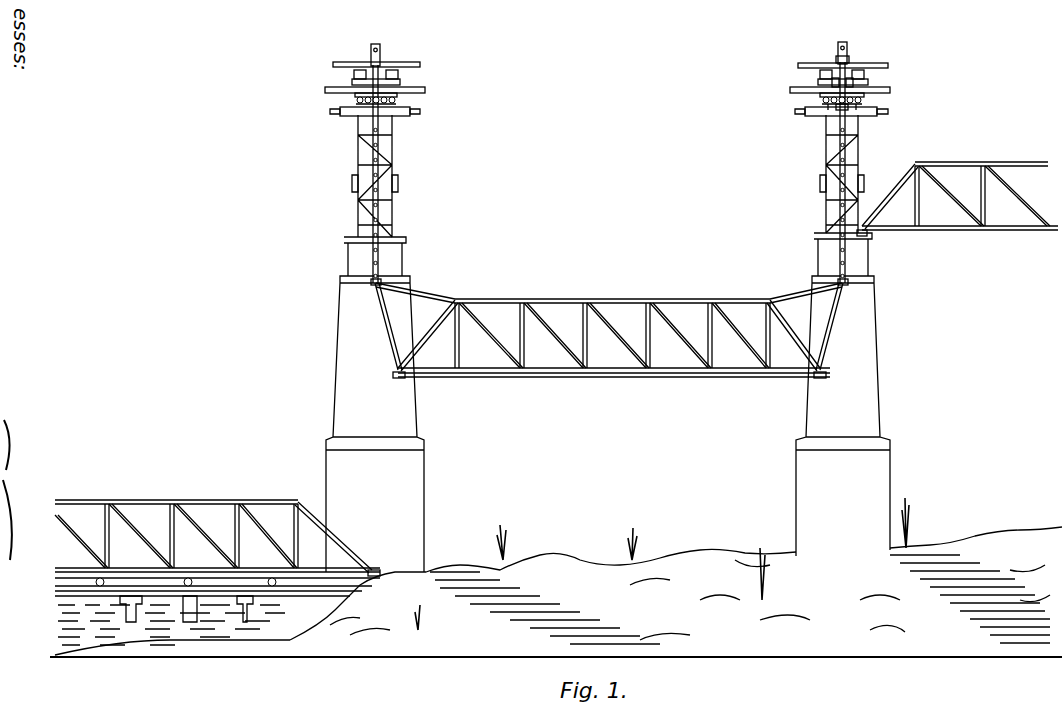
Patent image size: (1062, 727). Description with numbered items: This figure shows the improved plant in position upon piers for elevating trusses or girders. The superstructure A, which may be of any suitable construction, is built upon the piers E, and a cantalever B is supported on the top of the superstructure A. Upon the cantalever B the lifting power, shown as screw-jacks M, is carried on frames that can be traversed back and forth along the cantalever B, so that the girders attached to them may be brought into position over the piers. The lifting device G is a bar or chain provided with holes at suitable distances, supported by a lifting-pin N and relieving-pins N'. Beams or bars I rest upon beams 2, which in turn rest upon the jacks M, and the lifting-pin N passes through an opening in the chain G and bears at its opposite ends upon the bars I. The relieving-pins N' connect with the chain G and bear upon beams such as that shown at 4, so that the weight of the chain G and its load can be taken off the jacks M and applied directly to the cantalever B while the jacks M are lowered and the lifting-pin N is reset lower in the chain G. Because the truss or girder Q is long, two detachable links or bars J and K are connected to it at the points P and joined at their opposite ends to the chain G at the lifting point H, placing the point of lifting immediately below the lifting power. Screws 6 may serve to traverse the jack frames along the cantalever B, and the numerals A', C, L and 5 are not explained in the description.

The superstructure A is at (621, 172).
The collar on mast A' is at (620, 182).
The cantalever B is at (356, 100).
The base plate of turntable C is at (410, 112).
The piers E is at (608, 402).
The lifting device G is at (381, 50).
The point of lifting H is at (872, 284).
The beams or bars I is at (890, 66).
The detachable link or bar J is at (420, 292).
The detachable link or bar K is at (378, 306).
The top plate L is at (420, 65).
The screw-jacks M is at (891, 81).
The lifting-pin N is at (855, 58).
The relieving-pin N' is at (826, 82).
The points of connection to truss or girder P is at (458, 298).
The truss span Q is at (982, 157).
The beams 2 is at (396, 76).
The beam bearing 4 is at (822, 101).
The ring plate 5 is at (402, 97).
The screws 6 is at (350, 87).